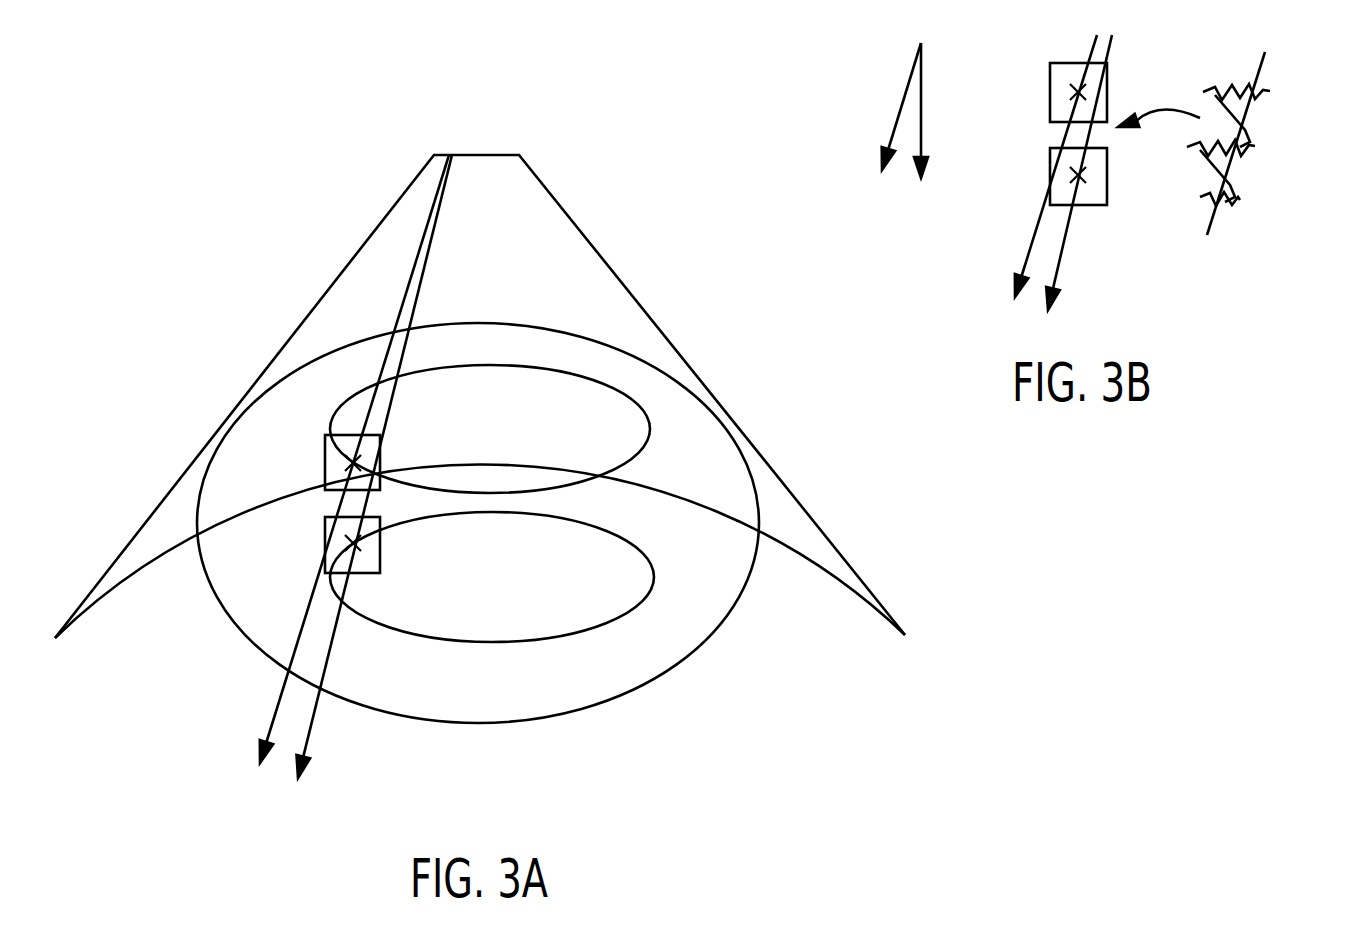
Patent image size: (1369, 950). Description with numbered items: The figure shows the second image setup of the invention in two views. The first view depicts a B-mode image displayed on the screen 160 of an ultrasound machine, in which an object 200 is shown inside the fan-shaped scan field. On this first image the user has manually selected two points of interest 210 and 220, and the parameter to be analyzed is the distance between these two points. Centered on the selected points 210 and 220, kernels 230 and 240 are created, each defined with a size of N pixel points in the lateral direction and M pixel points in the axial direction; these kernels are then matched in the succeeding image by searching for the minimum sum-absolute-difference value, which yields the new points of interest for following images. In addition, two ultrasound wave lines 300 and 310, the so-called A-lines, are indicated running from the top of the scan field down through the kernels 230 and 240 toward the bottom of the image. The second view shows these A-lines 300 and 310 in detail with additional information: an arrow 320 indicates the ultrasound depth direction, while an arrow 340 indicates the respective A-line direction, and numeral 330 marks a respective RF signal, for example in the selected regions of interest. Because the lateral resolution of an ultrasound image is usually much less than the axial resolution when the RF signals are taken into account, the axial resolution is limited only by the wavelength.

In FIG. 3A, the screen 160 is at (657, 320).
In FIG. 3A, the object 200 is at (688, 628).
In FIG. 3A, the point of interest 210 is at (362, 463).
In FIG. 3A, the point of interest 220 is at (358, 545).
In FIG. 3A, the kernel 230 is at (325, 463).
In FIG. 3A, the kernel 240 is at (325, 528).
In FIG. 3A, the ultrasound wave line 300 is at (311, 725).
In FIG. 3B, the ultrasound wave line 300 is at (1062, 250).
In FIG. 3A, the ultrasound wave line 310 is at (277, 715).
In FIG. 3B, the ultrasound wave line 310 is at (1033, 235).
In FIG. 3B, the arrow 320 is at (923, 110).
In FIG. 3B, the RF signal 330 is at (1253, 133).
In FIG. 3B, the arrow 340 is at (900, 108).